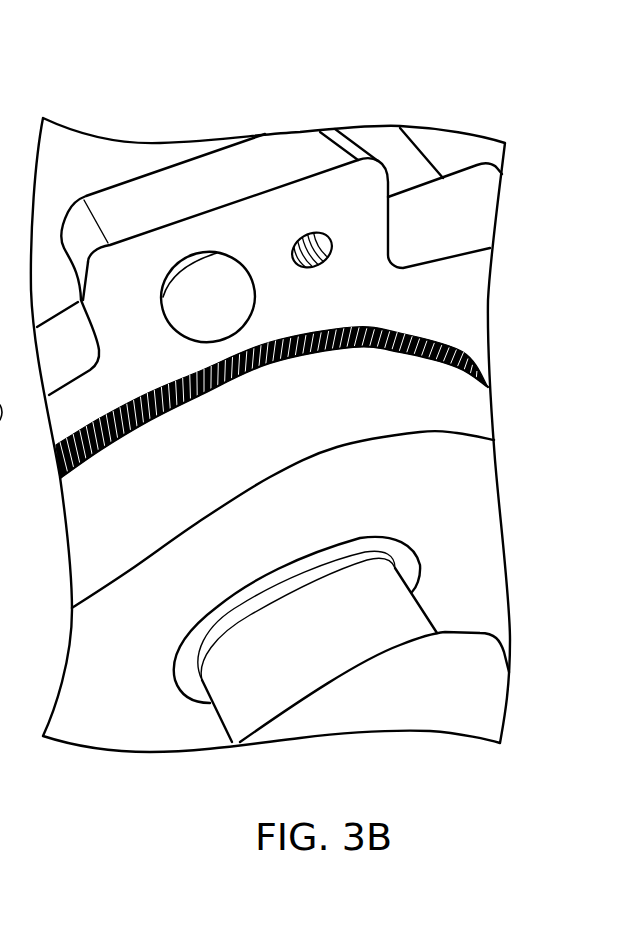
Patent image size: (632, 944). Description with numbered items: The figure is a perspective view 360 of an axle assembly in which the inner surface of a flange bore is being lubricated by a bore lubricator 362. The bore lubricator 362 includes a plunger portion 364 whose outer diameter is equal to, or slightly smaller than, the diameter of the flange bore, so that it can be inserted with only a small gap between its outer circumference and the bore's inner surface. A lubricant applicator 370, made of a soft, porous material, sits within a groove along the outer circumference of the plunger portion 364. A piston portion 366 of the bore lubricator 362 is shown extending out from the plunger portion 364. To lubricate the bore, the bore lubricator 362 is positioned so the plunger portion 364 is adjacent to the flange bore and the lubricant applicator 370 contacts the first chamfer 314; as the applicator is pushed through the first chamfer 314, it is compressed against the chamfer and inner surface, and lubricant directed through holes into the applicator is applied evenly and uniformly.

The perspective view 360 is at (430, 63).
The bore lubricator 362 is at (515, 435).
The lubricant applicator 370 is at (385, 327).
The first chamfer 314 is at (465, 352).
The plunger portion 364 is at (385, 403).
The piston portion 366 is at (447, 633).